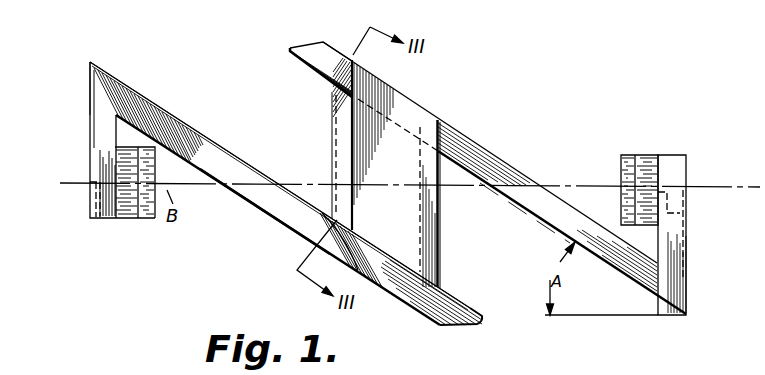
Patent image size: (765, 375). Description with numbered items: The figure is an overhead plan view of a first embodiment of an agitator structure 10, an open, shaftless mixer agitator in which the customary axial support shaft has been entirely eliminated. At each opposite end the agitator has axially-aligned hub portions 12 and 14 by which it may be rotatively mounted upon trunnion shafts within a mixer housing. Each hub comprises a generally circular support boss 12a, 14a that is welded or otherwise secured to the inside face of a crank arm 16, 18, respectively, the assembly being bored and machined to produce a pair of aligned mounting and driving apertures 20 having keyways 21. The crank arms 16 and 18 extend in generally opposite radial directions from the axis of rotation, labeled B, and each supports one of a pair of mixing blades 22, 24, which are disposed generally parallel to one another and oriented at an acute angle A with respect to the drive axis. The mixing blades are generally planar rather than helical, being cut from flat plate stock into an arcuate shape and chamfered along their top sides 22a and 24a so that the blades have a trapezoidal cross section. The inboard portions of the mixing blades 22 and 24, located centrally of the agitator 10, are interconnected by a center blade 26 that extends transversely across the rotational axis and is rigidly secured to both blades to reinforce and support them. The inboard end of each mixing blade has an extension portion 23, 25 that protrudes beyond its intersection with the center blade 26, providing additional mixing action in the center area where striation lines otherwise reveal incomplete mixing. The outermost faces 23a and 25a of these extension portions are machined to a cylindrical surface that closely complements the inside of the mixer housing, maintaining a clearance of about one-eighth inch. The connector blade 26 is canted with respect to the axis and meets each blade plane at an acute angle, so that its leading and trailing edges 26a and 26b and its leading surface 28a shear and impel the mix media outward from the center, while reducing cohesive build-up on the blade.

The agitator structure 10 is at (462, 108).
The hub portion 12 is at (90, 215).
The support boss 12a is at (123, 222).
The hub portion 14 is at (673, 153).
The support boss 14a is at (648, 160).
The crank arm 16 is at (97, 117).
The crank arm 18 is at (673, 265).
The mounting and driving aperture 20 is at (100, 182).
The keyway 21 is at (230, 153).
The mixing blade 22 is at (165, 104).
The top side of mixing blade 22a is at (238, 194).
The extension portion 23 is at (473, 305).
The outermost face 23a is at (477, 321).
The mixing blade 24 is at (532, 183).
The top side of mixing blade 24a is at (606, 244).
The extension portion 25 is at (299, 58).
The outermost face 25a is at (310, 47).
The center blade 26 is at (385, 153).
The leading edge 26a is at (350, 177).
The trailing edge 26b is at (333, 153).
The leading surface 28a is at (335, 222).